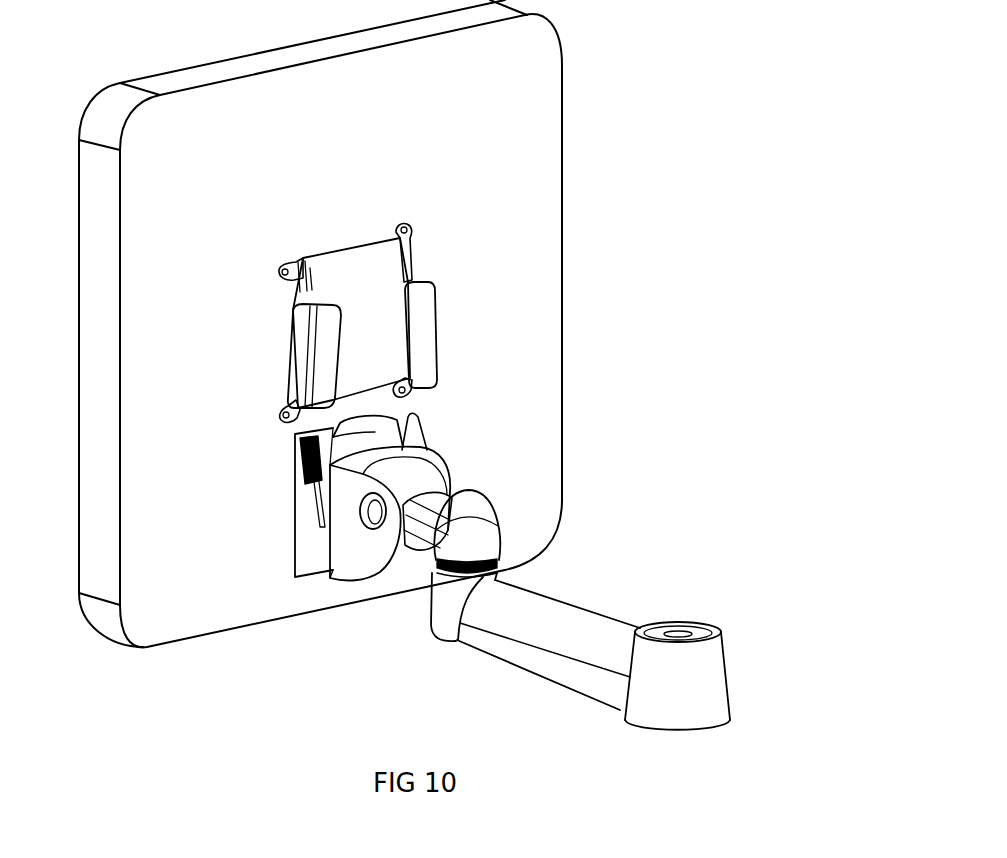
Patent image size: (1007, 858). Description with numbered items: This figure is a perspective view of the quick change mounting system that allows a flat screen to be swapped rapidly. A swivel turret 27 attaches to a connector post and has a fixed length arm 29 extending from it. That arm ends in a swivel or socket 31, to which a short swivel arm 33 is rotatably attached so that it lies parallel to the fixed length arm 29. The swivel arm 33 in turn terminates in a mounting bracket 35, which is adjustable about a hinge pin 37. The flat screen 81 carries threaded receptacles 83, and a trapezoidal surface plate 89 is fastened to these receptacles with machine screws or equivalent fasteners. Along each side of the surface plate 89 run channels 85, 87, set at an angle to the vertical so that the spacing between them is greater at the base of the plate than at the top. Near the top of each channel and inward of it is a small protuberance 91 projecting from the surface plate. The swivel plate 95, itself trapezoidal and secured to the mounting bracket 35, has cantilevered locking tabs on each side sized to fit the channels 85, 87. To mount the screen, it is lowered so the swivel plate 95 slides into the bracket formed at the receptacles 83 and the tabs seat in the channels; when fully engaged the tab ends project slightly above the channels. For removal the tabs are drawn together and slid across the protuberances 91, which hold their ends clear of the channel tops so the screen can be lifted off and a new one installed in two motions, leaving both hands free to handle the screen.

The swivel turret 27 is at (717, 690).
The fixed length arm 29 is at (580, 628).
The swivel or socket 31 is at (443, 625).
The short swivel arm 33 is at (475, 552).
The mounting bracket 35 is at (352, 549).
The hinge pin 37 is at (362, 507).
The flat screen 81 is at (523, 80).
The threaded receptacles 83 is at (375, 205).
The channel 85 is at (423, 340).
The channel 87 is at (313, 357).
The trapezoidal surface plate 89 is at (347, 273).
The protuberance 91 is at (410, 250).
The swivel plate 95 is at (325, 423).